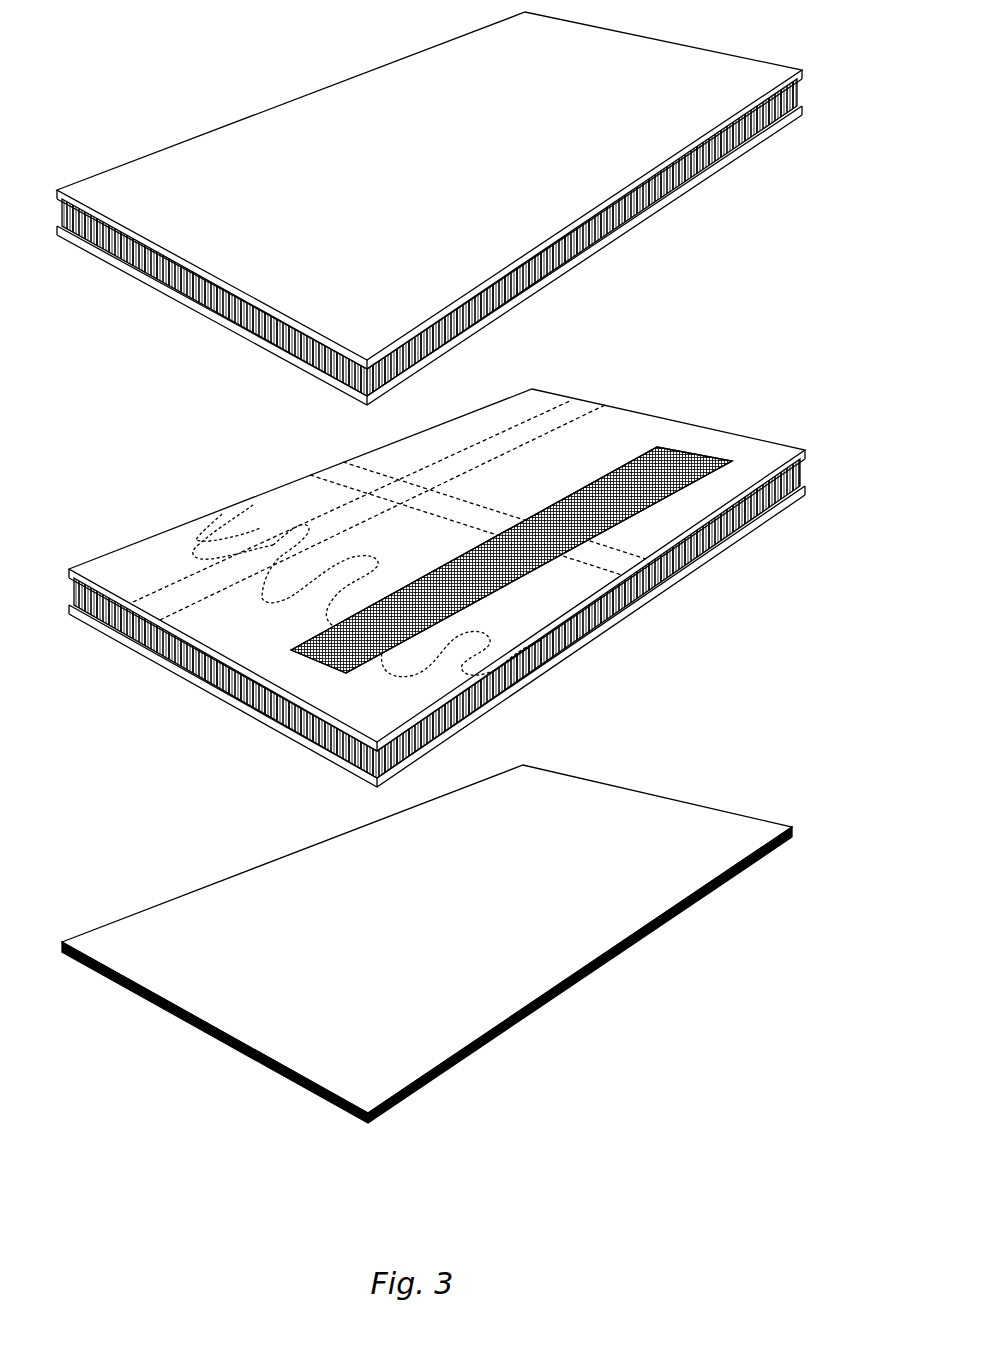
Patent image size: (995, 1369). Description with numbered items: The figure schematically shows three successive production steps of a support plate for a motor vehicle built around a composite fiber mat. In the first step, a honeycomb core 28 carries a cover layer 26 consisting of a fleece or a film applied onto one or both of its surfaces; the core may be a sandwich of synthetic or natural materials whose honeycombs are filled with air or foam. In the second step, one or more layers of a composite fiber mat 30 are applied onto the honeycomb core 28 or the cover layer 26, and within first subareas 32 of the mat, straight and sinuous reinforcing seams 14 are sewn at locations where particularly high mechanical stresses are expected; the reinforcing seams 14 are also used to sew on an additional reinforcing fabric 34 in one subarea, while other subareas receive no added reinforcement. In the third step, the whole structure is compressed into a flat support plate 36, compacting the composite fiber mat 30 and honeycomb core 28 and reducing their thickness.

The reinforcing seams 14 is at (270, 545).
The cover layer 26 is at (715, 68).
The honeycomb core 28 is at (783, 105).
The composite fiber mat 30 is at (640, 430).
The first subareas 32 is at (190, 552).
The additional reinforcing fabric 34 is at (487, 573).
The flat support plate 36 is at (732, 828).